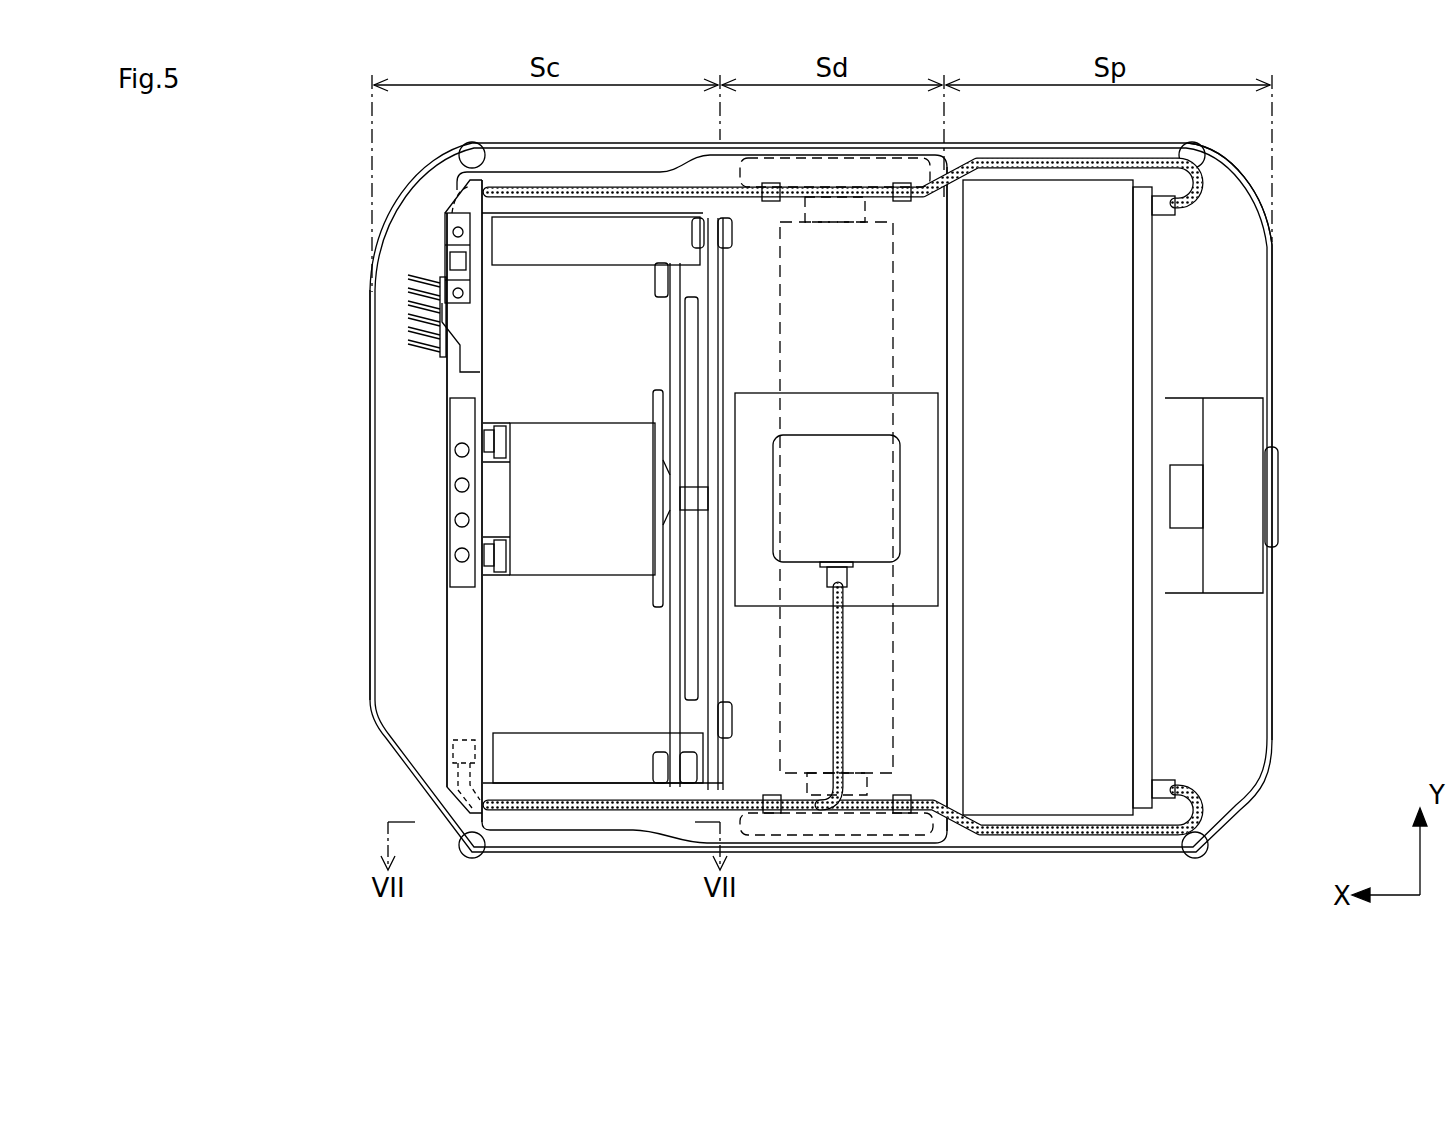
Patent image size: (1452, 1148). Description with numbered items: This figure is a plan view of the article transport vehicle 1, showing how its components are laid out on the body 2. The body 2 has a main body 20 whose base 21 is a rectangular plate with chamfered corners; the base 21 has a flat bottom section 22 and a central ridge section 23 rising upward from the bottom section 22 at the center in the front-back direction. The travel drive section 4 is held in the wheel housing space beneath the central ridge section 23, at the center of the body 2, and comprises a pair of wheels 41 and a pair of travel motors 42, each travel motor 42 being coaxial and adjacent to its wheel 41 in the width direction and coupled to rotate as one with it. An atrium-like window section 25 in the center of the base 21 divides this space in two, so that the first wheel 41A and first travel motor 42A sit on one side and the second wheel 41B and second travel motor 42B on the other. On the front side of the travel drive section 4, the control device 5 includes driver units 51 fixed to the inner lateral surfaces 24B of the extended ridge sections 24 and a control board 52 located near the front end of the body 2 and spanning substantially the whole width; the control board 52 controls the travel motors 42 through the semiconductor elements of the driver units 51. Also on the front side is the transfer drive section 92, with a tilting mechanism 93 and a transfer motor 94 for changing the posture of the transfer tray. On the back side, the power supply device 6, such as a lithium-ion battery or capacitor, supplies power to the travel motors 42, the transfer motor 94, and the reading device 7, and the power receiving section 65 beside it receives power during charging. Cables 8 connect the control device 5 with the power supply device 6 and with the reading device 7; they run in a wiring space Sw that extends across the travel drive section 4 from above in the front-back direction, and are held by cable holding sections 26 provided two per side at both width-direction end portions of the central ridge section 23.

The article transport vehicle 1 is at (320, 100).
The body 2 is at (292, 178).
The main body 20 is at (347, 268).
The base 21 is at (1254, 186).
The bottom section 22 is at (1228, 312).
The central ridge section 23 is at (930, 775).
The extended ridge section 24 is at (545, 180).
The inner lateral surface 24B is at (613, 222).
The window section 25 is at (912, 395).
The cable holding section 26 is at (770, 200).
The travel drive section 4 is at (820, 929).
The wheel 41 is at (844, 521).
The first wheel 41A is at (897, 840).
The second wheel 41B is at (797, 157).
The travel motor 42 is at (930, 496).
The first travel motor 42A is at (893, 690).
The second travel motor 42B is at (893, 290).
The control device 5 is at (440, 760).
The driver unit 51 is at (545, 250).
The control board 52 is at (465, 670).
The power supply device 6 is at (1085, 200).
The power receiving section 65 is at (1228, 428).
The reading device 7 is at (880, 498).
The cable 8 is at (1003, 165).
The transfer drive section 92 is at (515, 590).
The tilting mechanism 93 is at (690, 628).
The transfer motor 94 is at (598, 440).
The wiring space Sw is at (700, 172).